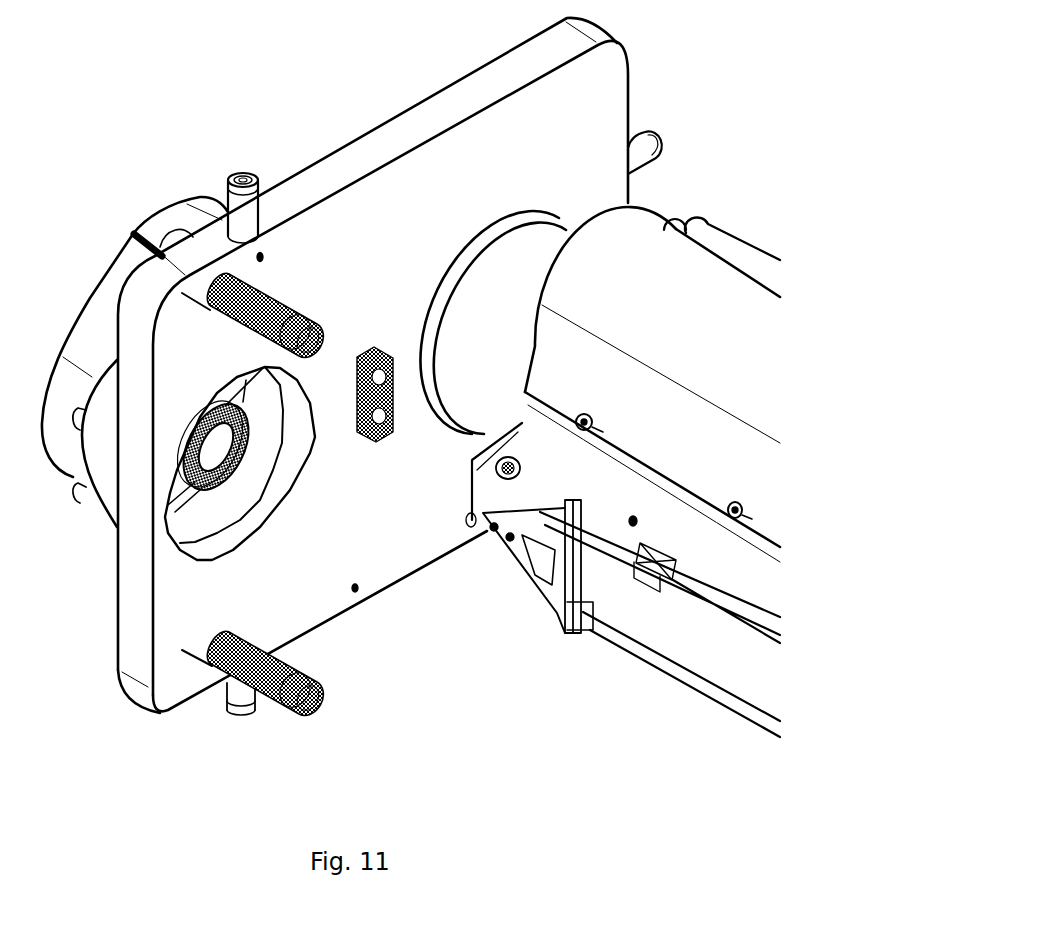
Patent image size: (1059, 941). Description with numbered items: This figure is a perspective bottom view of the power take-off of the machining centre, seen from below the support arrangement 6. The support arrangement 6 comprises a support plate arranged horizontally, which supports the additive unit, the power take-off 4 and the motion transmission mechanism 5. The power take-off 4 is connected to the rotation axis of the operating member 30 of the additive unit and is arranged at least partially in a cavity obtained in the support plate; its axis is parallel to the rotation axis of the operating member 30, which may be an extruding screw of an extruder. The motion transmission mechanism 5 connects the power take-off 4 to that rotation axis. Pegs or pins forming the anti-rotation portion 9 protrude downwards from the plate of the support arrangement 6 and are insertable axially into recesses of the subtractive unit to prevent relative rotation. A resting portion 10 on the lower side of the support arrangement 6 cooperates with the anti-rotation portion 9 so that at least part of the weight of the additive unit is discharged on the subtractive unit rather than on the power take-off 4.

The power take-off 4 is at (102, 473).
The motion transmission mechanism 5 is at (107, 308).
The support arrangement 6 is at (372, 147).
The anti-rotation portion 9 is at (282, 293).
The resting portion 10 is at (360, 443).
The operating member 30 is at (688, 285).